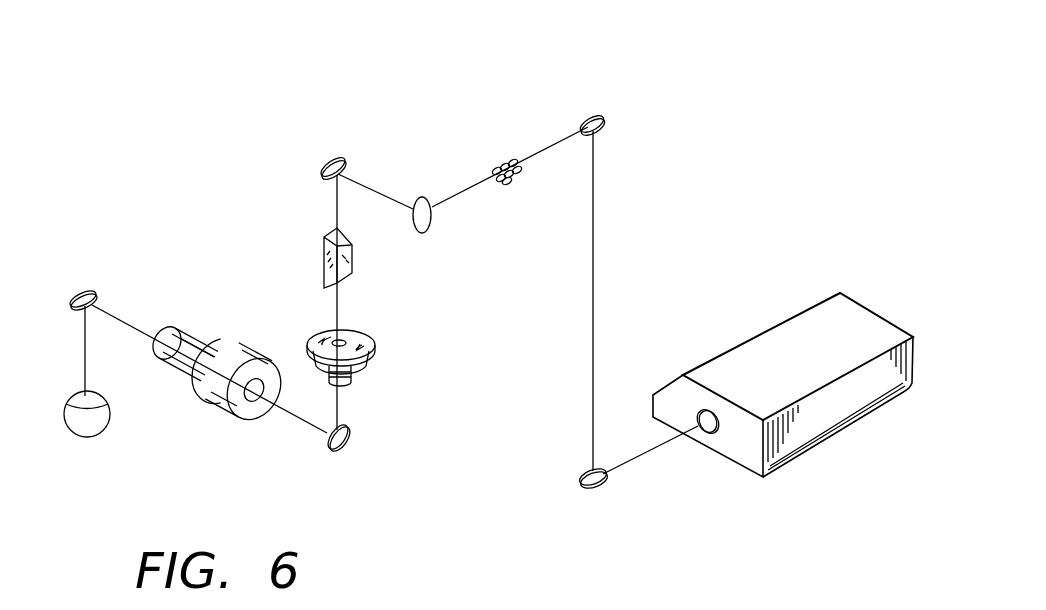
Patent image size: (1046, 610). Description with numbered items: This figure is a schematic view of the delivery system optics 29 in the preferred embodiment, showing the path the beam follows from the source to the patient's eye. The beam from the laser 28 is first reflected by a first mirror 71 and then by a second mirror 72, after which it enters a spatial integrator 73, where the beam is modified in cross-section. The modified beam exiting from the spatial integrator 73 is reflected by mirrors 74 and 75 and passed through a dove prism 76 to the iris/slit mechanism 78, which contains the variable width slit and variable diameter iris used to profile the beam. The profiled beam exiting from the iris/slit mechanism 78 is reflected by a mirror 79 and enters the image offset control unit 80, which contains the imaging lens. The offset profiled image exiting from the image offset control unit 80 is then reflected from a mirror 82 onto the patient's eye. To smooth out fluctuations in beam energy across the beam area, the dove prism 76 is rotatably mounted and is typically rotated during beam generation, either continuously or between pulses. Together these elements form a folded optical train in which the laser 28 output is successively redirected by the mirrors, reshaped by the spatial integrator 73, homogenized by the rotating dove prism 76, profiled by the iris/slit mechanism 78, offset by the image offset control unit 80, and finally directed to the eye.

The laser 28 is at (733, 365).
The optical system 29 is at (662, 198).
The first mirror 71 is at (592, 487).
The second mirror 72 is at (603, 123).
The spatial integrator 73 is at (500, 160).
The mirror 74 is at (432, 222).
The mirror 75 is at (328, 158).
The dove prism 76 is at (323, 260).
The iris/slit mechanism 78 is at (360, 332).
The mirror 79 is at (345, 442).
The image offset control unit 80 is at (217, 347).
The mirror 82 is at (85, 288).